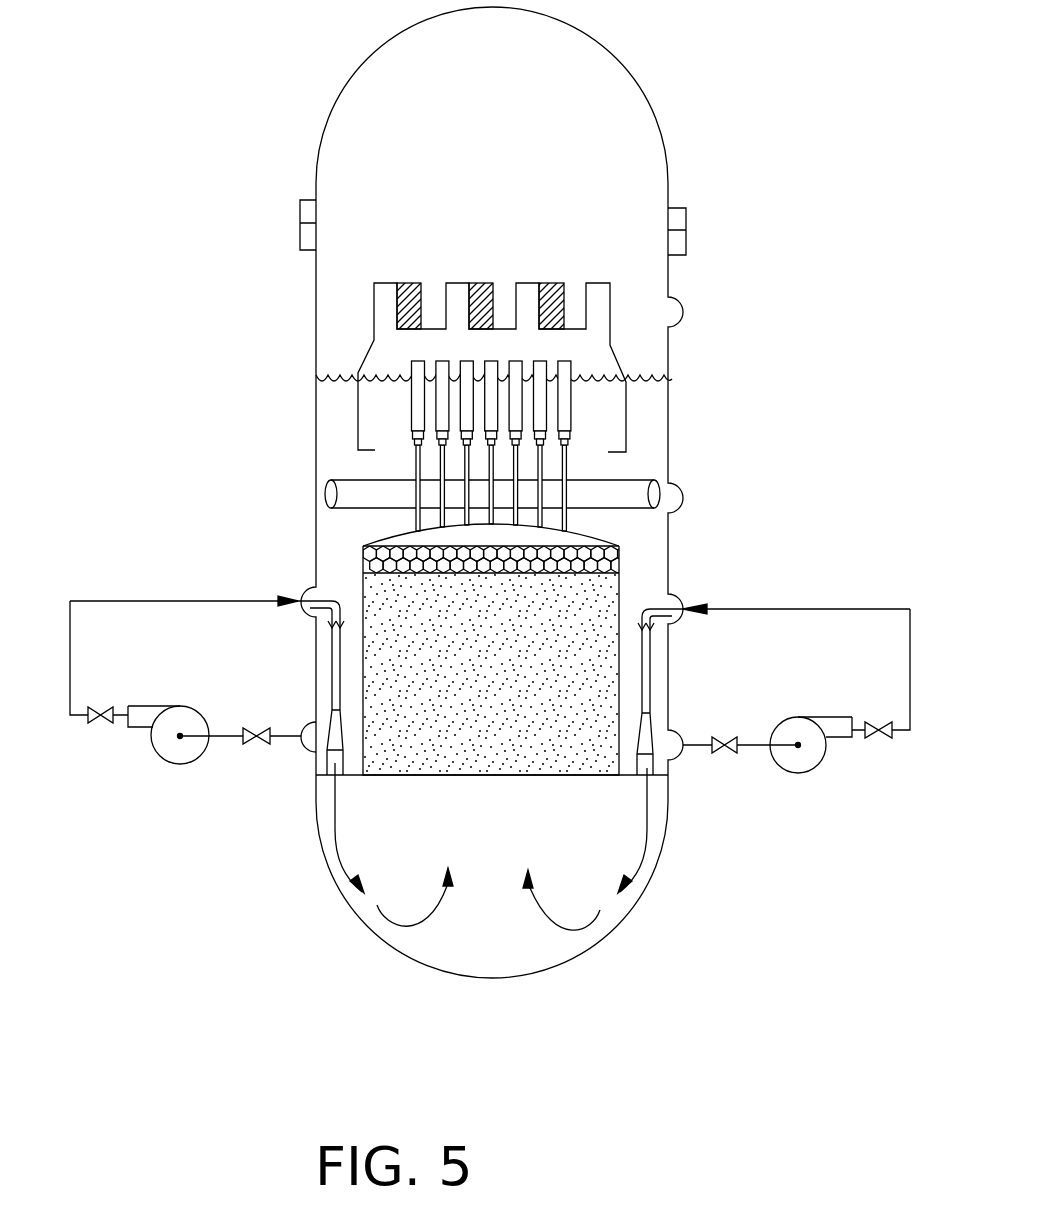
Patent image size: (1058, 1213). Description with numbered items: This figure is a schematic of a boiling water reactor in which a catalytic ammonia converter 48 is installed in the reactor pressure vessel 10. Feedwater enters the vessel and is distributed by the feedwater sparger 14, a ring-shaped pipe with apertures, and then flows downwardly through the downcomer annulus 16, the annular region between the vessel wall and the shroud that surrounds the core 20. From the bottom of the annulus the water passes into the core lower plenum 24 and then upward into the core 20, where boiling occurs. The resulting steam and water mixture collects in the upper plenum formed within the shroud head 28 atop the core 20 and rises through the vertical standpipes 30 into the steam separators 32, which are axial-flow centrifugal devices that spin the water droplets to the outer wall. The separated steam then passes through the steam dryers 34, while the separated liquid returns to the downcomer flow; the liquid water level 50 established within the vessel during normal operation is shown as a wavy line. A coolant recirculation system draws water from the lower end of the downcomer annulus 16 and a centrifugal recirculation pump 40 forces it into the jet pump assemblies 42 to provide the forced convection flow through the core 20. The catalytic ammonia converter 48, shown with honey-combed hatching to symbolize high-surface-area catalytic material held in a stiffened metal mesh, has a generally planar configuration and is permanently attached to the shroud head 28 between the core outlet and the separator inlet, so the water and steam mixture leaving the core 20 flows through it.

The reactor pressure vessel 10 is at (668, 415).
The feedwater sparger 14 is at (633, 483).
The downcomer annulus 16 is at (320, 688).
The core 20 is at (622, 668).
The core lower plenum 24 is at (595, 888).
The shroud head 28 is at (615, 542).
The standpipes 30 is at (418, 493).
The steam separators 32 is at (418, 405).
The steam dryers 34 is at (612, 284).
The recirculation pump 40 is at (807, 772).
The jet pump assemblies 42 is at (643, 730).
The catalytic ammonia converter 48 is at (618, 565).
The liquid water level 50 is at (343, 377).